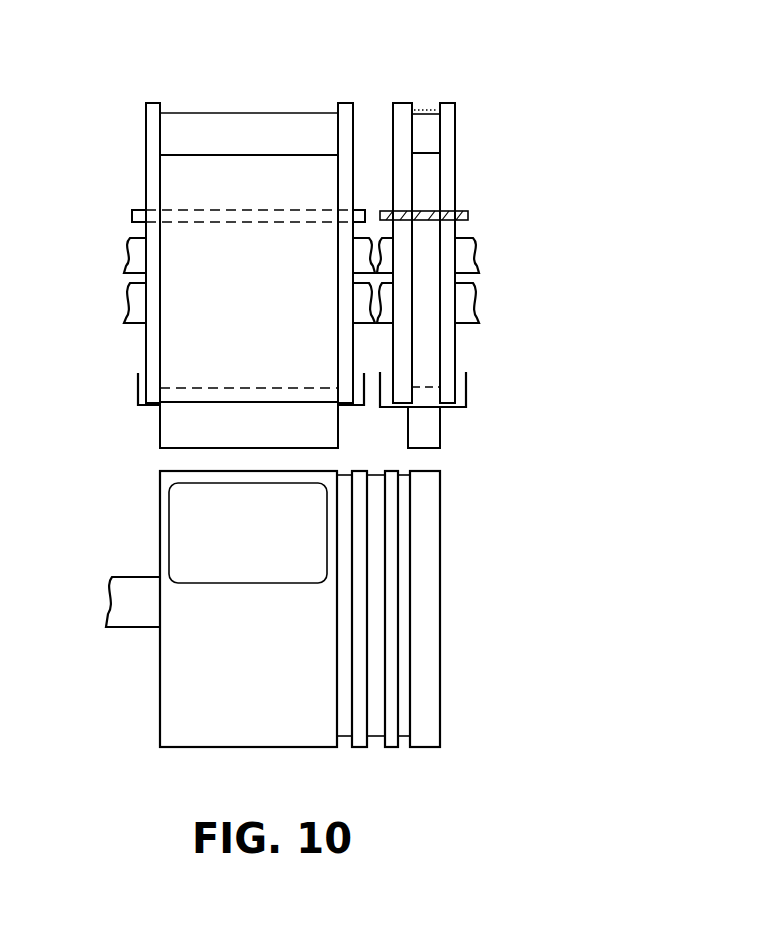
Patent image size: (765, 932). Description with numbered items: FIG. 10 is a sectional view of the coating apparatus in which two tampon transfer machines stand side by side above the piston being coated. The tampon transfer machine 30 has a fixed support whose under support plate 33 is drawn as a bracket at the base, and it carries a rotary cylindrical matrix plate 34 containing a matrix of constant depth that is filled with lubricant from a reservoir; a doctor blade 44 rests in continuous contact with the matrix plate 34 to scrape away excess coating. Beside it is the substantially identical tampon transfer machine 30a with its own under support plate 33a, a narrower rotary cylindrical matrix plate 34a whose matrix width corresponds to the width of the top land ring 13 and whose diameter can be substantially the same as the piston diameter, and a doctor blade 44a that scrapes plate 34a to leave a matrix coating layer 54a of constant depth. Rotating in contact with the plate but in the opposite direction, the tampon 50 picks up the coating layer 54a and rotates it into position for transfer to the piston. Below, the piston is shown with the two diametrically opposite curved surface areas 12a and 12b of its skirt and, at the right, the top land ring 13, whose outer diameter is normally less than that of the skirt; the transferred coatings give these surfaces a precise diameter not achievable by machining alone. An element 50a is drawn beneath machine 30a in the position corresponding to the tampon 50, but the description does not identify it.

The tampon transfer machine 30 is at (293, 88).
The rotary cylindrical matrix plate 34 is at (214, 122).
The doctor blade 44 is at (140, 208).
The under support plate 33 is at (138, 378).
The tampon 50 is at (170, 418).
The tampon transfer machine 30a is at (446, 80).
The matrix coating layer 54a is at (432, 108).
The rotary cylindrical matrix plate 34a is at (432, 133).
The doctor blade 44a is at (470, 212).
The under support plate 33a is at (470, 375).
The hub body 50a is at (440, 437).
The curved surface area of piston skirt 12a is at (178, 476).
The curved surface area of piston skirt 12b is at (170, 685).
The top land ring 13 is at (433, 637).